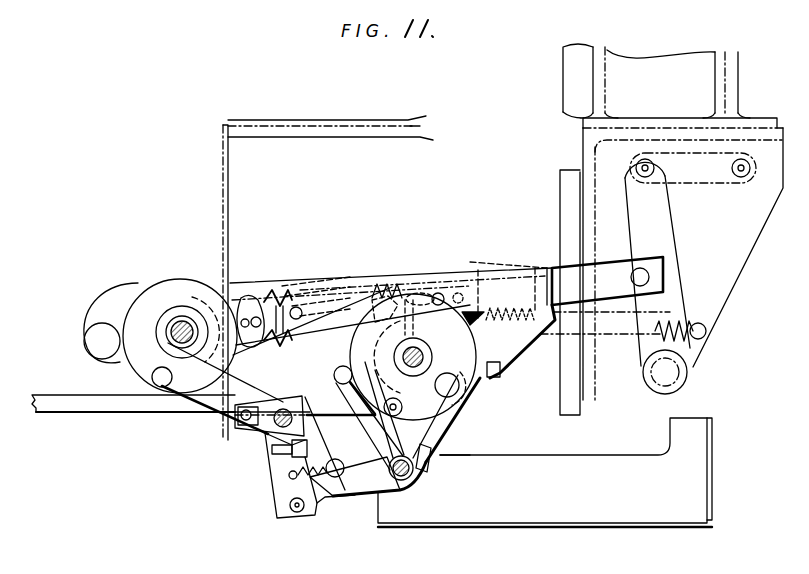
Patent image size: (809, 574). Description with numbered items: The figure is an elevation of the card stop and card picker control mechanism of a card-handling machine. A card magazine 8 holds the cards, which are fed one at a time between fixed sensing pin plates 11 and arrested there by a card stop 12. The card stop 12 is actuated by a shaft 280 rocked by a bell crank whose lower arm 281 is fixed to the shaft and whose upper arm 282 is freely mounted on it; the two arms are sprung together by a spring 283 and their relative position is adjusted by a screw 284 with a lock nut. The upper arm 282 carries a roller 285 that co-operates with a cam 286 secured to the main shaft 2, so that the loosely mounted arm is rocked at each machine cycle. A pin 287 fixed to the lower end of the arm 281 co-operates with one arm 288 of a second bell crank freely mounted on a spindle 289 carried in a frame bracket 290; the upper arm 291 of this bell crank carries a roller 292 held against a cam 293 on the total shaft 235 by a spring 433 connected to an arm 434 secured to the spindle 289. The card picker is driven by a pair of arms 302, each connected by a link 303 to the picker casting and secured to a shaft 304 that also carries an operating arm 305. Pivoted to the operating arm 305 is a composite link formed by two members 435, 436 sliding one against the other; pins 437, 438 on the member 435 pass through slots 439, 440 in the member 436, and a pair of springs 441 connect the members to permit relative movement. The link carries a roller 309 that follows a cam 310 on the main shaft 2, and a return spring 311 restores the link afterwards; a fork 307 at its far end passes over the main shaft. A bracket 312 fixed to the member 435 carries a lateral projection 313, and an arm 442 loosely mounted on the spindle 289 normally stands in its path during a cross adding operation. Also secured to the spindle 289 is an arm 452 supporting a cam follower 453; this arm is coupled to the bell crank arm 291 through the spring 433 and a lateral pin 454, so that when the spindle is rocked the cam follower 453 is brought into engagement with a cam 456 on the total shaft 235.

The main shaft 2 is at (172, 342).
The card magazine 8 is at (726, 89).
The sensing pin plates 11 is at (276, 133).
The card stop 12 is at (222, 168).
The total shaft 235 is at (424, 354).
The shaft 280 is at (277, 432).
The lower arm 281 is at (278, 465).
The upper arm 282 is at (283, 403).
The spring 283 is at (312, 482).
The screw 284 is at (308, 446).
The roller 285 is at (162, 389).
The cam 286 is at (182, 290).
The pin 287 is at (290, 507).
The arm of bell crank 288 is at (358, 488).
The spindle 289 is at (418, 482).
The frame bracket 290 is at (490, 522).
The upper arm of bell crank 291 is at (458, 433).
The roller 292 is at (455, 393).
The cam 293 is at (505, 406).
The arms 302 is at (668, 249).
The link 303 is at (690, 184).
The shaft 304 is at (668, 374).
The operating arm 305 is at (670, 299).
The lever 307 is at (232, 298).
The roller 309 is at (102, 335).
The cam 310 is at (152, 292).
The return spring 311 is at (610, 338).
The bracket 312 is at (533, 343).
The lateral projection 313 is at (500, 378).
The spring 433 is at (415, 470).
The arm 434 is at (398, 482).
The link member 435 is at (467, 283).
The link member 436 is at (428, 277).
The pin 437 is at (447, 297).
The pin 438 is at (298, 308).
The slot 439 is at (456, 297).
The slot 440 is at (309, 322).
The springs 441 is at (321, 300).
The arm 442 is at (459, 413).
The arm 452 is at (340, 381).
The cam follower 453 is at (334, 375).
The lateral pin 454 is at (428, 456).
The cam 456 is at (358, 356).